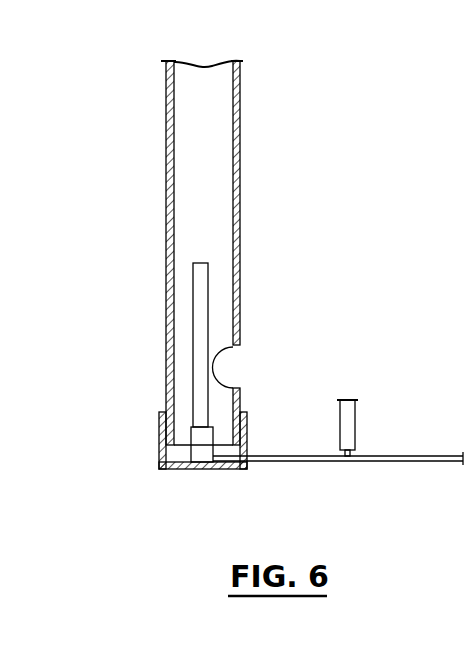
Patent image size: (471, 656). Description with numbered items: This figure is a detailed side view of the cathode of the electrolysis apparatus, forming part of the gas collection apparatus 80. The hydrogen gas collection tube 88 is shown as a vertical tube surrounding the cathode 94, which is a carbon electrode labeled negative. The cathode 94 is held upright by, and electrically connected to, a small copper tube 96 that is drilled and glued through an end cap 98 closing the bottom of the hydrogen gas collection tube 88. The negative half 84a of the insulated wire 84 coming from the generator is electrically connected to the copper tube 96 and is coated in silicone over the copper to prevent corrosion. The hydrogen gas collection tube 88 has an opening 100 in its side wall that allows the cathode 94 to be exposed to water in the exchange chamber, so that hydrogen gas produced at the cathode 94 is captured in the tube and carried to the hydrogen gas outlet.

The gas collection apparatus 80 is at (287, 304).
The insulated wire 84 is at (348, 432).
The negative half of the insulated wire 84a is at (312, 462).
The hydrogen gas collection tube 88 is at (163, 101).
The cathode 94 is at (203, 309).
The copper tube 96 is at (200, 452).
The end cap 98 is at (172, 467).
The opening 100 is at (234, 370).